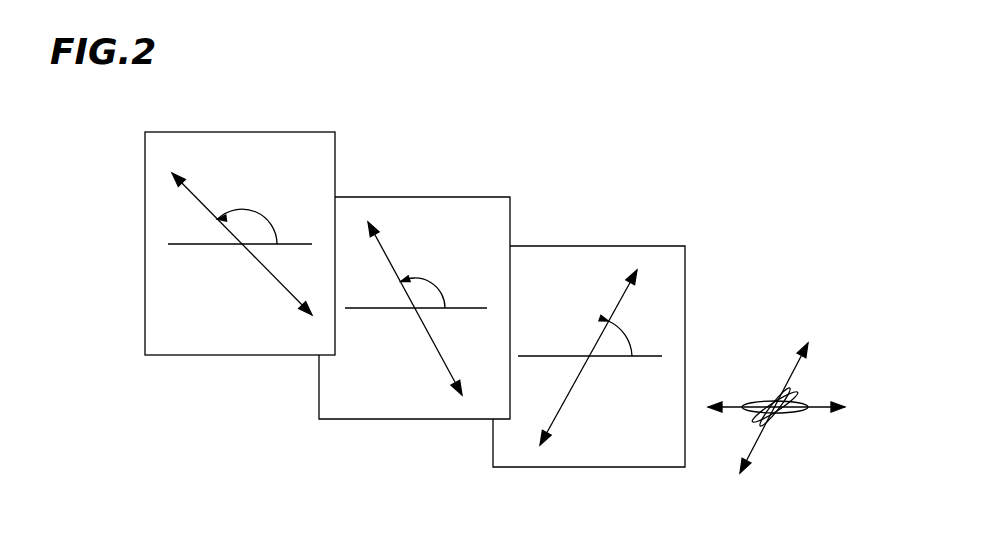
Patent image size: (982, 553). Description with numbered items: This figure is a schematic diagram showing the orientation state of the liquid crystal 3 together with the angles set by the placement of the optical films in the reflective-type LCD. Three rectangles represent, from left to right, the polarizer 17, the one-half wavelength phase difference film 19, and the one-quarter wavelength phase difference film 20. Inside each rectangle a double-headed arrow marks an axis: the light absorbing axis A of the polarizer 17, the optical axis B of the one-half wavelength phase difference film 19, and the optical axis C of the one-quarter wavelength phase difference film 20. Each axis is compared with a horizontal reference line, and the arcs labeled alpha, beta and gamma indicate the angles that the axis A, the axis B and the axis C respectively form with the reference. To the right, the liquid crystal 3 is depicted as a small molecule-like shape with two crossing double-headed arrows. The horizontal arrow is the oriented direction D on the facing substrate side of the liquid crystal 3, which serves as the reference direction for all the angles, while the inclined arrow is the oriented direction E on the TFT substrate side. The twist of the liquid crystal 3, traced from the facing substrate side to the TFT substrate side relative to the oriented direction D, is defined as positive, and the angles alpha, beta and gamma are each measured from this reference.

The polarizer 17 is at (179, 355).
The ½ wavelength phase difference film 19 is at (483, 197).
The ¼ wavelength phase difference film 20 is at (653, 246).
The liquid crystal 3 is at (772, 355).
The light absorbing axis A is at (270, 273).
The optical axis B is at (437, 350).
The optical axis C is at (569, 393).
The oriented direction D is at (737, 408).
The oriented direction E is at (757, 445).